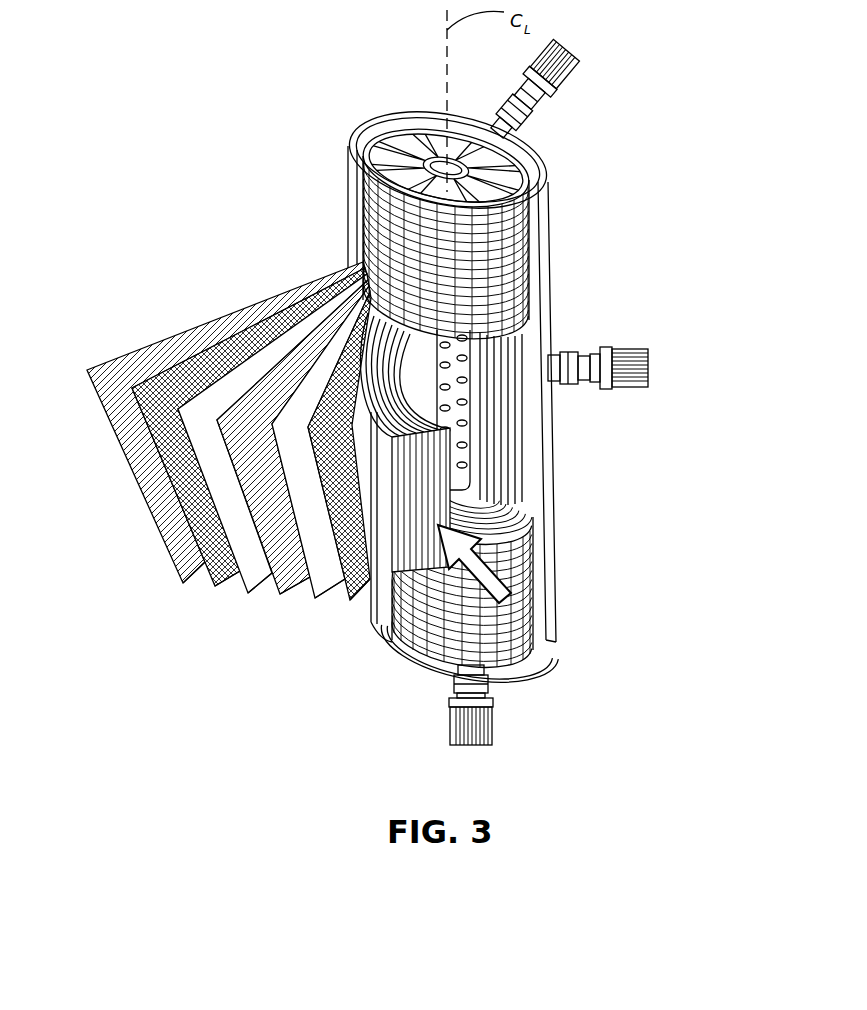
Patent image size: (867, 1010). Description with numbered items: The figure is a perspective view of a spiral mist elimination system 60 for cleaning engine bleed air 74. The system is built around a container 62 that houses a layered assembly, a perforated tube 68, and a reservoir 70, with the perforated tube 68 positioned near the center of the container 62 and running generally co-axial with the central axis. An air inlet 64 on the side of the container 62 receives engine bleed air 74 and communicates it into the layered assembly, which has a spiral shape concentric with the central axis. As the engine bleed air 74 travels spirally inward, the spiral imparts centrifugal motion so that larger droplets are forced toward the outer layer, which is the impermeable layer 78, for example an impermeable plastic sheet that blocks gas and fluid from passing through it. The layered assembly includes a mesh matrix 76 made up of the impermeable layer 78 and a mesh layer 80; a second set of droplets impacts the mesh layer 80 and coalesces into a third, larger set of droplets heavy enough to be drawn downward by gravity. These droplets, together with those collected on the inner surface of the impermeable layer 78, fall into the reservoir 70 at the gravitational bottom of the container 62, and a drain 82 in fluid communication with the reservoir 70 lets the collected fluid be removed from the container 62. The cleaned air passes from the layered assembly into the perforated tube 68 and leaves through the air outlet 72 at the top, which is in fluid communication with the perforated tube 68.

The spiral mist elimination system 60 is at (377, 103).
The container 62 is at (348, 186).
The air inlet 64 is at (626, 347).
The perforated tube 68 is at (478, 405).
The reservoir 70 is at (443, 660).
The air outlet 72 is at (566, 78).
The engine bleed air 74 is at (493, 567).
The mesh matrix 76 is at (427, 577).
The impermeable layer 78 is at (130, 350).
The mesh layer 80 is at (208, 577).
The drain 82 is at (490, 700).